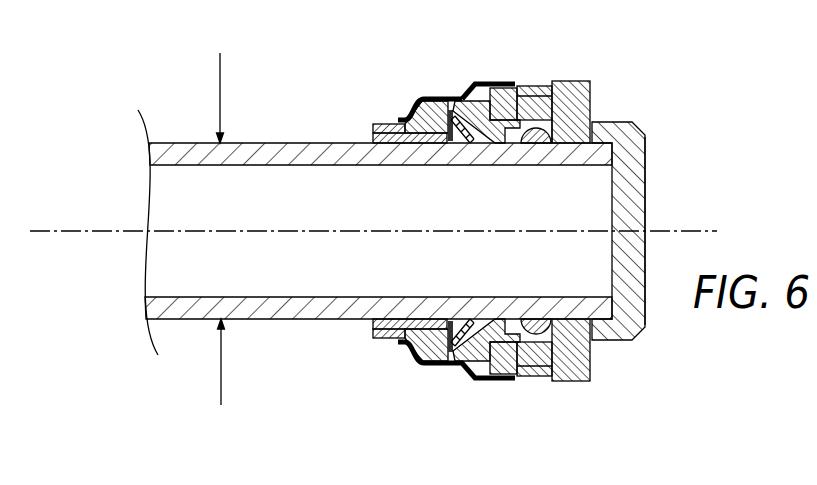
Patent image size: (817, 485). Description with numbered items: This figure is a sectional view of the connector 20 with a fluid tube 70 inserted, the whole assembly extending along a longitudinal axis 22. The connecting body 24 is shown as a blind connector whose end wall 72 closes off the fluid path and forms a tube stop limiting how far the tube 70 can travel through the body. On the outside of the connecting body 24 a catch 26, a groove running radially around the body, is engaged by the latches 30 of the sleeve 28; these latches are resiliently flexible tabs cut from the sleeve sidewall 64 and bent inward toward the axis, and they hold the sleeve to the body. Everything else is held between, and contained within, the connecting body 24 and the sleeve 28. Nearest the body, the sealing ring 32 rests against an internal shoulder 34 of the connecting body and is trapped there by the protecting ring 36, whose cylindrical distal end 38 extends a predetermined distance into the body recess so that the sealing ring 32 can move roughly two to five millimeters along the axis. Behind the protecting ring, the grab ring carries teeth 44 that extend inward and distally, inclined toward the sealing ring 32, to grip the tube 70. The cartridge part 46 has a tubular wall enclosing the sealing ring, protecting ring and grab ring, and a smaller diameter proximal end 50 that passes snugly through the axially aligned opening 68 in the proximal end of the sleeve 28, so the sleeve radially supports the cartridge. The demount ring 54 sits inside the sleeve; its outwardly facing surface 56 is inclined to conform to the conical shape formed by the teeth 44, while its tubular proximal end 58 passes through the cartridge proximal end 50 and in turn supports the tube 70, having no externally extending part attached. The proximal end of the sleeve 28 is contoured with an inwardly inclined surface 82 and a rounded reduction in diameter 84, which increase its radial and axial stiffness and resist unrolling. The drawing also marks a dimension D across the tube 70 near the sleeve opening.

The connector 20 is at (338, 68).
The longitudinal axis 22 is at (82, 231).
The connecting body 24 is at (656, 140).
The catch 26 is at (533, 90).
The sleeve 28 is at (441, 90).
The latches 30 is at (548, 87).
The sealing ring 32 is at (550, 335).
The internal shoulder 34 is at (553, 133).
The protecting ring 36 is at (540, 343).
The distal end of protecting ring 38 is at (517, 134).
The teeth 44 is at (463, 323).
The cartridge part 46 is at (427, 350).
The proximal end of cartridge part 50 is at (374, 128).
The demount ring 54 is at (438, 128).
The outwardly facing surface 56 is at (441, 130).
The tubular proximal end 58 is at (374, 140).
The sleeve sidewall 64 is at (497, 87).
The axially aligned opening 68 is at (388, 118).
The fluid tube 70 is at (185, 330).
The end wall 72 is at (645, 210).
The inwardly inclined surface 82 is at (467, 92).
The rounded reduction in diameter 84 is at (415, 97).
The pipe diameter D is at (221, 372).